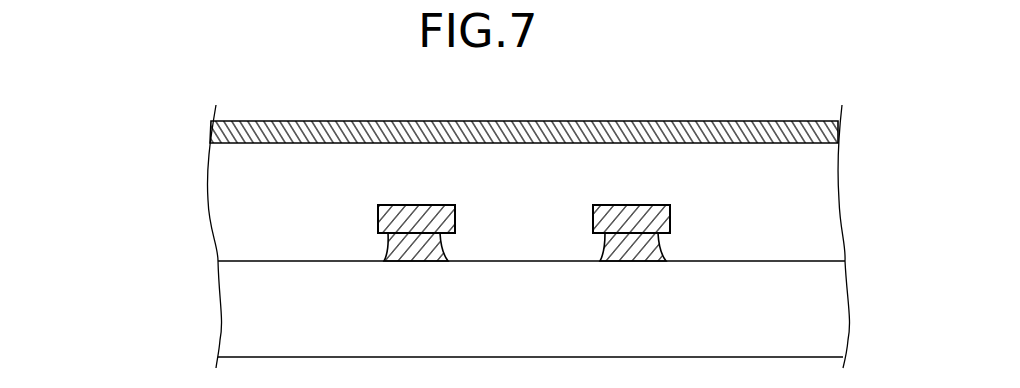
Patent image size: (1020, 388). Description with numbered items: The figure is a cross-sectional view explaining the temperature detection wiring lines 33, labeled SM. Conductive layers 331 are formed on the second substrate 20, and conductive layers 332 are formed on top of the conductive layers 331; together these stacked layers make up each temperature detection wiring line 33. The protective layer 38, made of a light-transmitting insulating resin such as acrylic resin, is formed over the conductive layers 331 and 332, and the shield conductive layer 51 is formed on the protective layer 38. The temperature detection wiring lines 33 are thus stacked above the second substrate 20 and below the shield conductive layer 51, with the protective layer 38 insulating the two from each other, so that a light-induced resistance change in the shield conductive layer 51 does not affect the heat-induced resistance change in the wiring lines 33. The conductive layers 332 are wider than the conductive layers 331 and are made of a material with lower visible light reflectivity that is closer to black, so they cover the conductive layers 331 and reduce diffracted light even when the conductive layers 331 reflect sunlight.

The second substrate 20 is at (834, 311).
The temperature detection wiring line 33 is at (419, 211).
The conductive layer 331 is at (393, 250).
The conductive layer 332 is at (388, 219).
The protective layer 38 is at (823, 166).
The shield conductive layer 51 is at (840, 130).